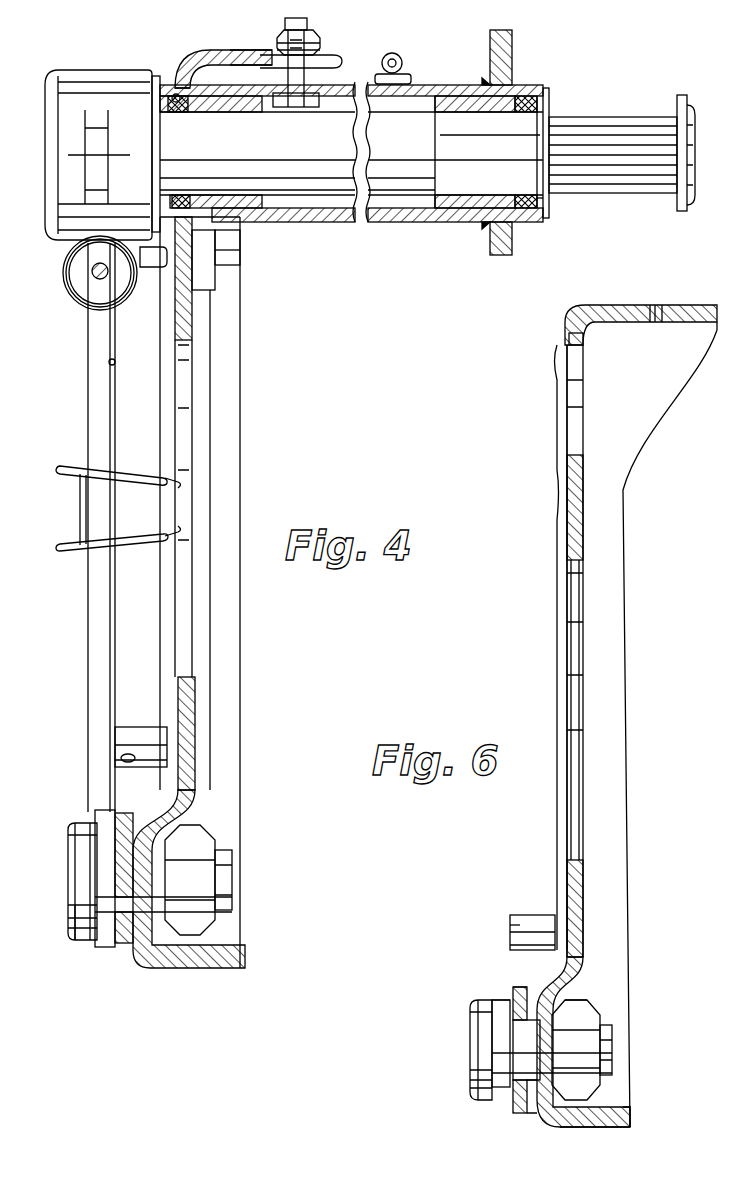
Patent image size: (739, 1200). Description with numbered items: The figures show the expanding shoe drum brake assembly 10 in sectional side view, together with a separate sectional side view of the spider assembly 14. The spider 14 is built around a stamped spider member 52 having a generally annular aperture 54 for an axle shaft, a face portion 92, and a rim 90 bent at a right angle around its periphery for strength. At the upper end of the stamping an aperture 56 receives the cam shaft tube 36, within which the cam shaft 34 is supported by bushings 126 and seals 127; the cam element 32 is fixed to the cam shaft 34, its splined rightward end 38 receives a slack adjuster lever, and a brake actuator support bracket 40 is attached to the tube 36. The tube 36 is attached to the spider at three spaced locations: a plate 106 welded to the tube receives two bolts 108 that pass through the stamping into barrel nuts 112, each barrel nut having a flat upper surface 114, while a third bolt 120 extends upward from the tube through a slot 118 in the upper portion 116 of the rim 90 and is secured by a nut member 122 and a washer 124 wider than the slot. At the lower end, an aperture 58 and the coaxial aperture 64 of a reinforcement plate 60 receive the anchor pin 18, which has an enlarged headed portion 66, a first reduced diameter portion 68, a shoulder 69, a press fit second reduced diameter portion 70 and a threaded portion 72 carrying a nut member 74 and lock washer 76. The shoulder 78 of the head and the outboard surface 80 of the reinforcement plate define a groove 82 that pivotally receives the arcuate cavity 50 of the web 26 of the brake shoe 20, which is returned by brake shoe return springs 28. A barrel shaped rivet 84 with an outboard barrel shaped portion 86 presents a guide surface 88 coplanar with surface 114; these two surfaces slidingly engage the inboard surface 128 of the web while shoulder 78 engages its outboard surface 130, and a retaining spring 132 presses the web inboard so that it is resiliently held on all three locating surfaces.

In FIG. 4, the expanding shoe drum brake assembly 10 is at (584, 80).
In FIG. 4, the spider 14 is at (185, 318).
In FIG. 6, the spider 14 is at (546, 413).
In FIG. 4, the anchor pin 18 is at (68, 867).
In FIG. 6, the anchor pin 18 is at (470, 1011).
In FIG. 4, the brake shoe 20 is at (88, 639).
In FIG. 4, the web 26 is at (100, 387).
In FIG. 4, the brake shoe return spring 28 is at (72, 296).
In FIG. 4, the cam element 32 is at (66, 92).
In FIG. 4, the cam shaft 34 is at (527, 132).
In FIG. 4, the cam shaft tube 36 is at (439, 84).
In FIG. 4, the rightward end of cam shaft 38 is at (622, 124).
In FIG. 4, the brake actuator support bracket 40 is at (513, 56).
In FIG. 4, the arcuate cavity 50 is at (97, 855).
In FIG. 6, the spider stamping 52 is at (579, 470).
In FIG. 6, the annular aperture 54 is at (569, 574).
In FIG. 4, the aperture 56 is at (173, 94).
In FIG. 6, the aperture 56 is at (577, 342).
In FIG. 6, the aperture 58 is at (548, 1034).
In FIG. 4, the reinforcement plate 60 is at (127, 947).
In FIG. 6, the reinforcement plate 60 is at (546, 1112).
In FIG. 6, the aperture 64 is at (594, 1016).
In FIG. 4, the enlarged headed portion 66 is at (79, 944).
In FIG. 6, the enlarged headed portion 66 is at (477, 1083).
In FIG. 4, the first reduced diameter portion 68 is at (102, 950).
In FIG. 6, the first reduced diameter portion 68 is at (500, 1082).
In FIG. 6, the shoulder 69 is at (521, 995).
In FIG. 4, the second reduced diameter portion 70 is at (145, 940).
In FIG. 6, the second reduced diameter portion 70 is at (538, 1066).
In FIG. 6, the threaded portion 72 is at (614, 1035).
In FIG. 6, the nut member 74 is at (599, 1029).
In FIG. 6, the washer 76 is at (588, 1110).
In FIG. 6, the shoulder 78 is at (497, 1000).
In FIG. 6, the outboard surface 80 is at (525, 1108).
In FIG. 6, the groove 82 is at (510, 990).
In FIG. 4, the barrel shaped rivet 84 is at (123, 728).
In FIG. 6, the barrel shaped rivet 84 is at (537, 912).
In FIG. 4, the outboard barrel shaped portion 86 is at (130, 738).
In FIG. 6, the outboard barrel shaped portion 86 is at (526, 920).
In FIG. 4, the guide surface 88 is at (115, 735).
In FIG. 6, the guide surface 88 is at (509, 929).
In FIG. 6, the rim 90 is at (634, 1124).
In FIG. 6, the face portion 92 is at (563, 655).
In FIG. 4, the plate 106 is at (206, 279).
In FIG. 4, the bolt 108 is at (230, 242).
In FIG. 4, the barrel nut 112 is at (150, 265).
In FIG. 4, the upper surface 114 is at (70, 248).
In FIG. 4, the upper portion of rim 116 is at (183, 80).
In FIG. 6, the upper portion of rim 116 is at (609, 304).
In FIG. 4, the slot 118 is at (360, 52).
In FIG. 6, the slot 118 is at (689, 304).
In FIG. 4, the bolt 120 is at (289, 18).
In FIG. 4, the nut member 122 is at (342, 60).
In FIG. 4, the washer 124 is at (258, 50).
In FIG. 4, the bushing 126 is at (492, 102).
In FIG. 4, the seal 127 is at (534, 201).
In FIG. 4, the inboard surface 128 is at (108, 362).
In FIG. 4, the outboard surface 130 is at (86, 424).
In FIG. 4, the retaining spring 132 is at (129, 472).